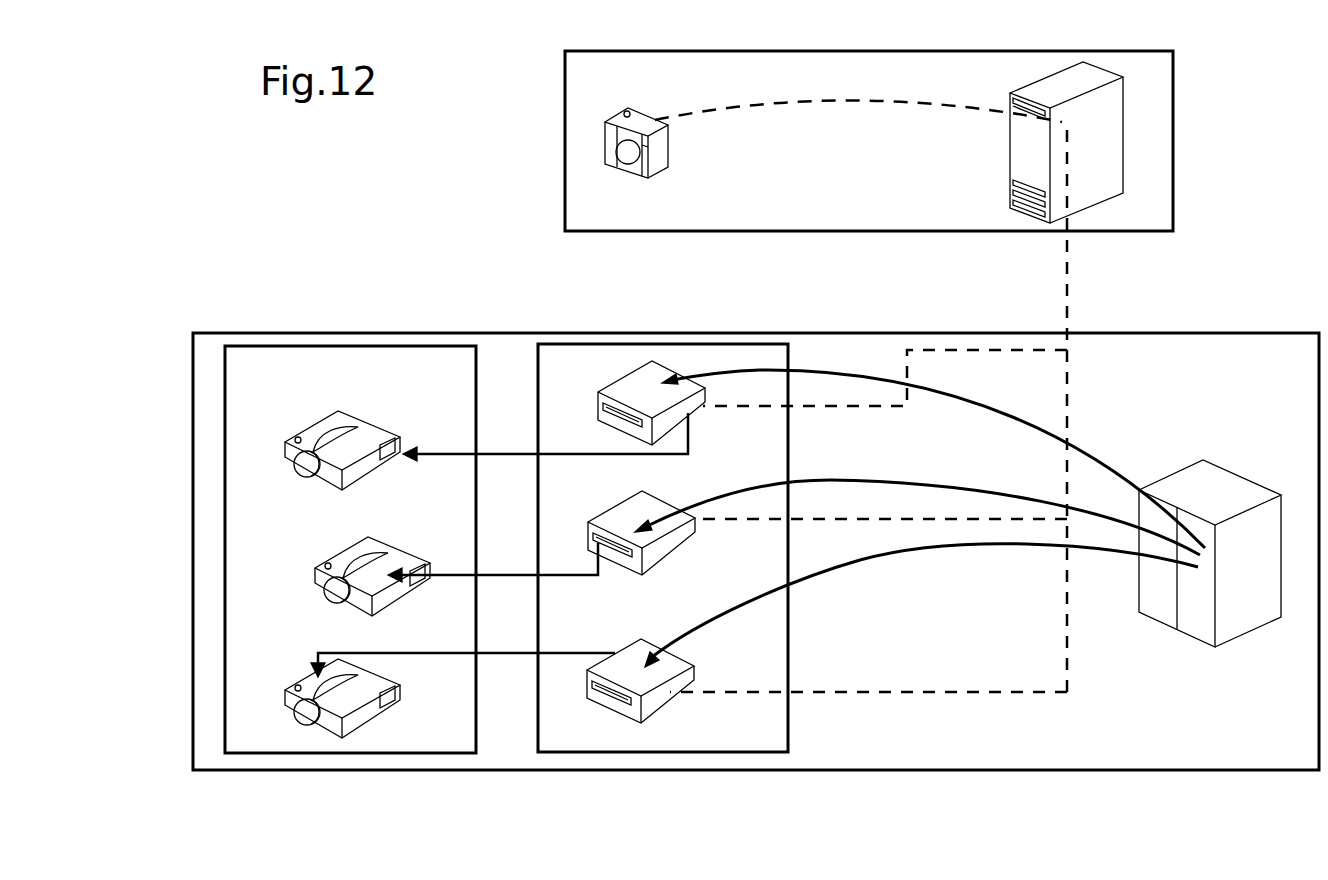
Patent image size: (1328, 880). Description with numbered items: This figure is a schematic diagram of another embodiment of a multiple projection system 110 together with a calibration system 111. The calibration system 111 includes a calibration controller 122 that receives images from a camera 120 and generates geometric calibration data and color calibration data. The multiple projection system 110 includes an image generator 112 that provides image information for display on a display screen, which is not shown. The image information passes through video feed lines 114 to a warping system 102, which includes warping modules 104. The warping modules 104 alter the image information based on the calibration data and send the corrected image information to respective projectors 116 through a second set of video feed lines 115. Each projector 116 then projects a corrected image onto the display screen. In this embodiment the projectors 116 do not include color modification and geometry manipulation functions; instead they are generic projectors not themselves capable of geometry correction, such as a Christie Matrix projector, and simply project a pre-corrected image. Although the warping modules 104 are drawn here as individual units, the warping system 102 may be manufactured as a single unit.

The warping system 102 is at (551, 756).
The warping modules 104 is at (667, 700).
The multiple projection system 110 is at (1089, 773).
The calibration system 111 is at (1175, 90).
The image generator 112 is at (1158, 608).
The video feed lines 114 is at (1088, 452).
The second set of video feed lines 115 is at (447, 452).
The projectors 116 is at (328, 739).
The camera 120 is at (603, 148).
The calibration controller 122 is at (1112, 170).